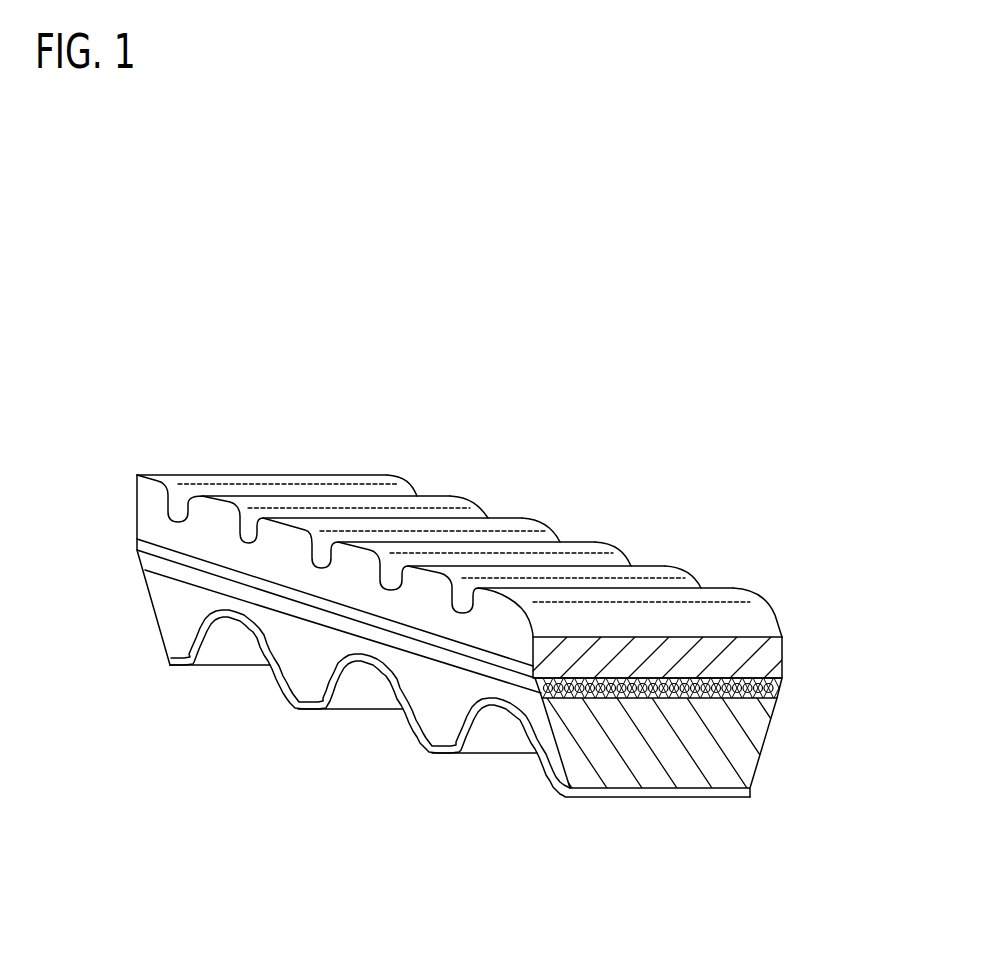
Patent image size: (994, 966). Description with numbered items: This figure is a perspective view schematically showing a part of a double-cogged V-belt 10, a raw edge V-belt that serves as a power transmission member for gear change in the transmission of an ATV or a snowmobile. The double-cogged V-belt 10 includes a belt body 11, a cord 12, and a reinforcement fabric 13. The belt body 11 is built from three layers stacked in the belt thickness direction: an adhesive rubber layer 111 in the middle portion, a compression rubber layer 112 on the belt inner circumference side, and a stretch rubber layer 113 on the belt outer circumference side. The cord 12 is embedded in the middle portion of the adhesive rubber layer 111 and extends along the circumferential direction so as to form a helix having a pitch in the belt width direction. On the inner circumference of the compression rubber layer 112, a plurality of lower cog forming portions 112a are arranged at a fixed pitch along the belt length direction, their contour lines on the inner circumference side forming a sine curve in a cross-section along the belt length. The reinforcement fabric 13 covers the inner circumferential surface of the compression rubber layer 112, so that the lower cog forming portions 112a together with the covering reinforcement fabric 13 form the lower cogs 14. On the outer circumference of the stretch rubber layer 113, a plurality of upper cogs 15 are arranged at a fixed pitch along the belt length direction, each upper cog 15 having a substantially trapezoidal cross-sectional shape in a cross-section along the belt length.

The double-cogged V-belt 10 is at (536, 338).
The belt body 11 is at (871, 634).
The adhesive rubber layer 111 is at (782, 690).
The compression rubber layer 112 is at (747, 745).
The lower cog forming portion 112a is at (276, 677).
The stretch rubber layer 113 is at (742, 662).
The cord 12 is at (617, 690).
The reinforcement fabric 13 is at (283, 704).
The lower cog 14 is at (183, 677).
The upper cog 15 is at (523, 525).